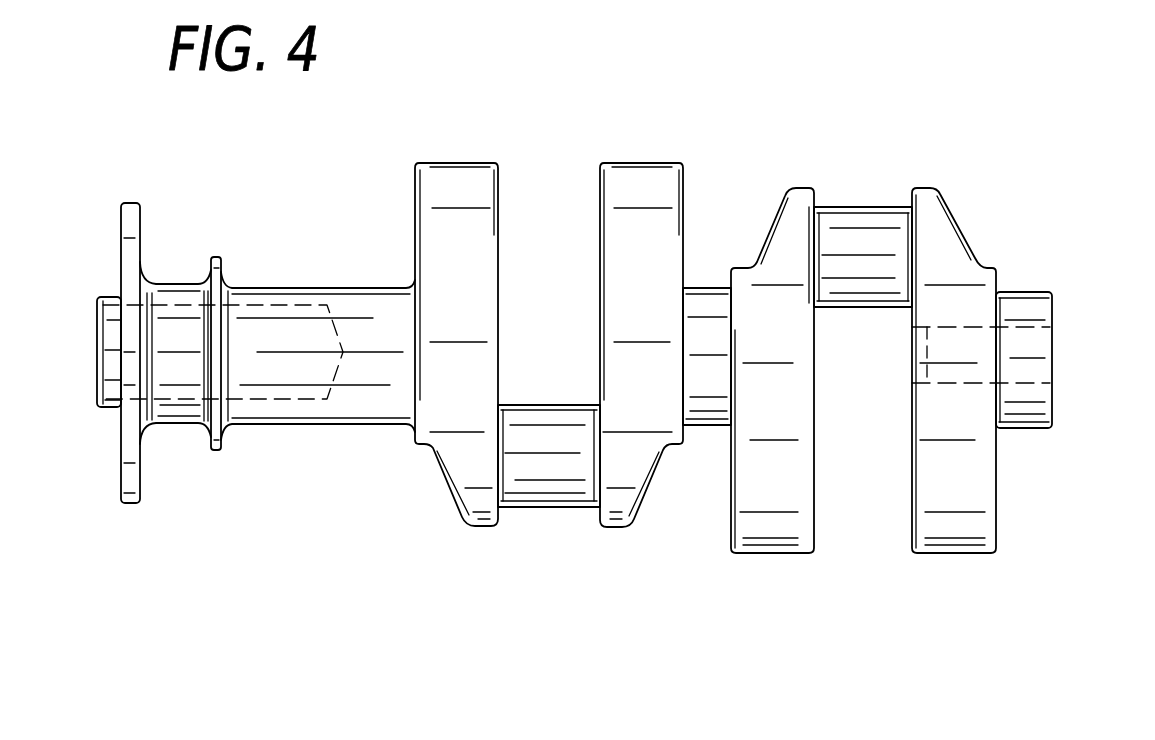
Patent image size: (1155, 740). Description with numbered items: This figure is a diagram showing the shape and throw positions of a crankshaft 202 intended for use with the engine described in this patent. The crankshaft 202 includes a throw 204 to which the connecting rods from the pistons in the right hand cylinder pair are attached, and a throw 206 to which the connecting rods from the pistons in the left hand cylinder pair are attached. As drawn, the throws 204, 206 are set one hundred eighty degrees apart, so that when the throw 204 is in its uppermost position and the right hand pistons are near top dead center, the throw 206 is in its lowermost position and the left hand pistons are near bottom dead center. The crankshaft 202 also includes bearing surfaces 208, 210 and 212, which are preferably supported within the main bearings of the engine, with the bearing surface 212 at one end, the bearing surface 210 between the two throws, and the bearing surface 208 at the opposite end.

The crankshaft 202 is at (625, 572).
The throw 204 is at (853, 206).
The throw 206 is at (568, 509).
The bearing surface 208 is at (1028, 432).
The bearing surface 210 is at (712, 431).
The bearing surface 212 is at (371, 424).